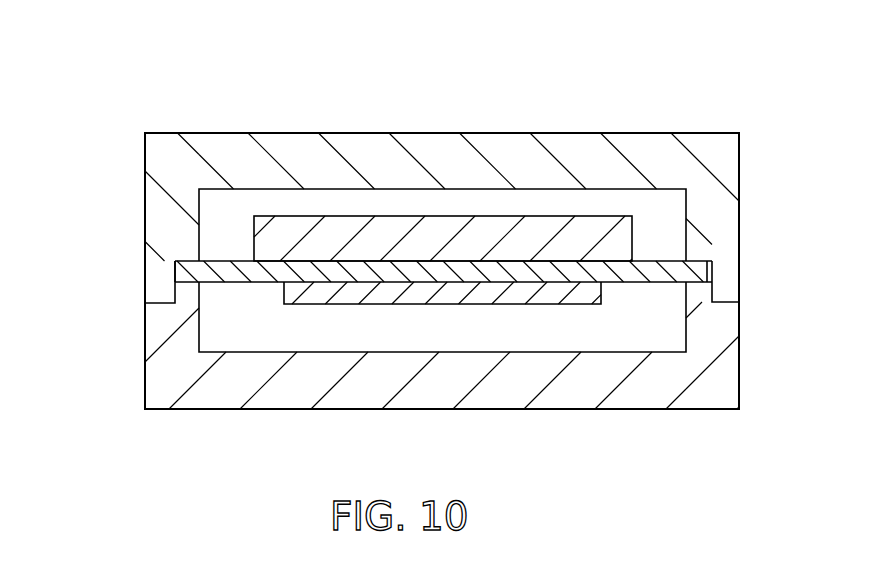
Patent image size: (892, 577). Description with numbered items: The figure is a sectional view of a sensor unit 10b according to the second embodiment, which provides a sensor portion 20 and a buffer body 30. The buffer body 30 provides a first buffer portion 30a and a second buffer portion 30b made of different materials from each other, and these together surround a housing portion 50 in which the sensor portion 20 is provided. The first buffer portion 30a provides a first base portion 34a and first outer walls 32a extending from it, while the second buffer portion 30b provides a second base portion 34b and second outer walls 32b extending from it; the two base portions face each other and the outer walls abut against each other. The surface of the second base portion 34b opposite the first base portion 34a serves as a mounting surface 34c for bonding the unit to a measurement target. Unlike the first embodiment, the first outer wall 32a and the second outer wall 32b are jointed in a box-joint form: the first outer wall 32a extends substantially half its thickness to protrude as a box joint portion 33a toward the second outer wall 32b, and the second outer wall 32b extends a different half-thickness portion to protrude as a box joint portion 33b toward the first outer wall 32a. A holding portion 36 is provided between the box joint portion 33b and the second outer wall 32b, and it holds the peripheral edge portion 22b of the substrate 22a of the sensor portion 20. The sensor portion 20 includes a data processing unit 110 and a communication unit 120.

The sensor unit 10b is at (515, 62).
The sensor portion 20 is at (450, 230).
The substrate 22a is at (239, 261).
The peripheral edge portion 22b is at (217, 283).
The buffer body 30 is at (68, 197).
The first buffer portion 30a is at (157, 216).
The second buffer portion 30b is at (157, 327).
The first outer wall 32a is at (722, 216).
The second outer wall 32b is at (722, 318).
The box joint portion 33a is at (160, 275).
The box joint portion 33b is at (187, 293).
The first base portion 34a is at (365, 150).
The second base portion 34b is at (355, 392).
The mounting surface 34c is at (467, 409).
The holding portion 36 is at (206, 261).
The housing portion 50 is at (559, 200).
The data processing unit 110 is at (320, 296).
The communication unit 120 is at (446, 310).